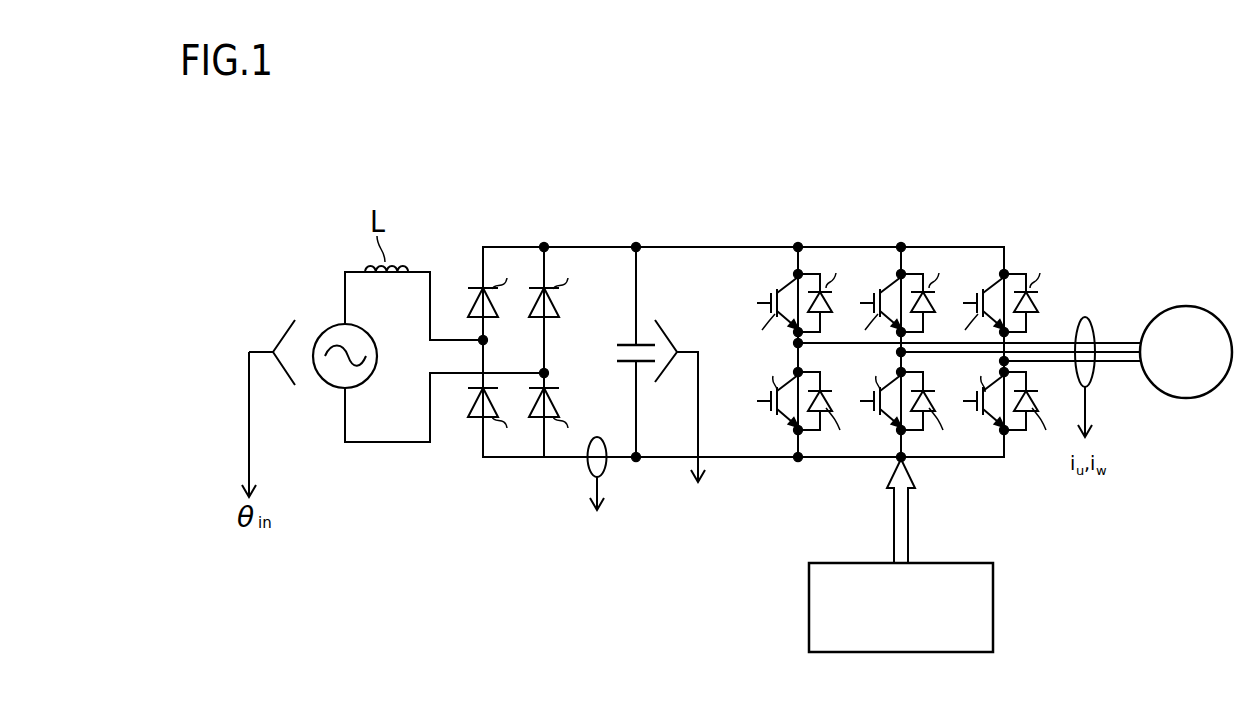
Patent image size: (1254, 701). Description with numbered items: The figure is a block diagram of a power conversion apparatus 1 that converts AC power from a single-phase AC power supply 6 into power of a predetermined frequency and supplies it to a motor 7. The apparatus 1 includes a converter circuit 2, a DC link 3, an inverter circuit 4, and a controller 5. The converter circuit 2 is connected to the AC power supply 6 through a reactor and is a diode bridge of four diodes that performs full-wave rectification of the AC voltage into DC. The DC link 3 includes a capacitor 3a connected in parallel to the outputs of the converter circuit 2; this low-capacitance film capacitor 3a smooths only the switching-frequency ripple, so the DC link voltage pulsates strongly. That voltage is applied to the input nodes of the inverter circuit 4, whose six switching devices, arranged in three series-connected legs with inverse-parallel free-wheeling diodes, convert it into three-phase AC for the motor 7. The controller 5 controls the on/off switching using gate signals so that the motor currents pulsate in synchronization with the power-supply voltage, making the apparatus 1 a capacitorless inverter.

The power conversion apparatus 1 is at (808, 140).
The converter circuit 2 is at (513, 235).
The DC link 3 is at (636, 317).
The capacitor 3a is at (626, 364).
The inverter circuit 4 is at (935, 236).
The controller 5 is at (993, 607).
The AC power supply 6 is at (329, 325).
The motor 7 is at (1185, 307).